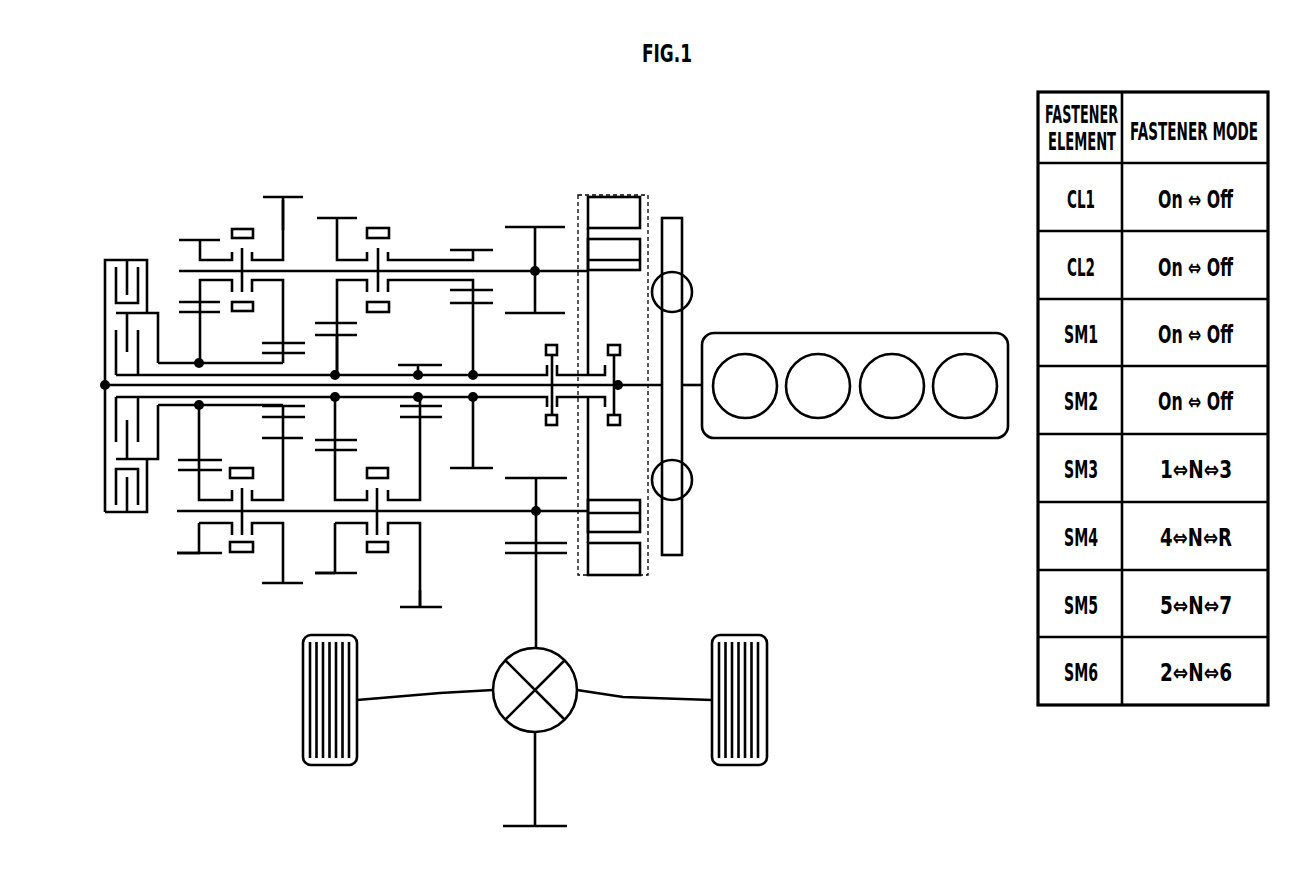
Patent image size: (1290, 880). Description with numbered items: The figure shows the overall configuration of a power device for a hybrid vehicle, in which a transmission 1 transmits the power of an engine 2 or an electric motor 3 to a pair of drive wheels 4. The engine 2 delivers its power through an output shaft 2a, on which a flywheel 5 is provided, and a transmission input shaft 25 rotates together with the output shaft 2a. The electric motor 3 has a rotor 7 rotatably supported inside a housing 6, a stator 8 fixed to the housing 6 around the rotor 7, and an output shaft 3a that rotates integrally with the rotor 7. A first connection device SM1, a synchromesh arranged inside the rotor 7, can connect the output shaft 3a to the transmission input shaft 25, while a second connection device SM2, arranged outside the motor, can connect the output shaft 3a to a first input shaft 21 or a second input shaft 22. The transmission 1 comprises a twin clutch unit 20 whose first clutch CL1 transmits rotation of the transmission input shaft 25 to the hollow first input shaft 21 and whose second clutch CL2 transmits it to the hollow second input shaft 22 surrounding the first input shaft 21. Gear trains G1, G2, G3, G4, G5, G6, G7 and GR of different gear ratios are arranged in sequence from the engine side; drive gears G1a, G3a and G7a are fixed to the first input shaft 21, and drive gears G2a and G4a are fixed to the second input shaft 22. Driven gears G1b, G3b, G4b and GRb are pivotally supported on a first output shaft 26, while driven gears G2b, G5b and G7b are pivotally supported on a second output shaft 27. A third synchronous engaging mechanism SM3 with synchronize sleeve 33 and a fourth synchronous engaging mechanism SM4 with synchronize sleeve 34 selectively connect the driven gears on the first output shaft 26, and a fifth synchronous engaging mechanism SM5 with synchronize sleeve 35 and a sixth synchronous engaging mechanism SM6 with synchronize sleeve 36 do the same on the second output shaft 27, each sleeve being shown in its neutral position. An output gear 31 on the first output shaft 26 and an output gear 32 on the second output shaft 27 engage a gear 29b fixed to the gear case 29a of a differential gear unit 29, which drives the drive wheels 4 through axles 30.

The transmission 1 is at (403, 140).
The engine 2 is at (780, 333).
The output shaft 2a is at (694, 382).
The electric motor 3 is at (648, 370).
The output shaft 3a is at (597, 400).
The drive wheels 4 is at (358, 738).
The flywheel 5 is at (674, 208).
The housing 6 is at (581, 195).
The rotor 7 is at (633, 249).
The stator 8 is at (633, 203).
The twin clutch unit 20 is at (112, 339).
The first input shaft 21 is at (454, 374).
The second input shaft 22 is at (178, 361).
The transmission input shaft 25 is at (178, 399).
The first output shaft 26 is at (484, 514).
The second output shaft 27 is at (513, 270).
The differential gear unit 29 is at (572, 654).
The gear case 29a is at (560, 725).
The gear 29b is at (538, 605).
The axles 30 is at (464, 697).
The output gear 31 is at (534, 494).
The output gear 32 is at (538, 252).
The synchronize sleeve 33 is at (377, 467).
The synchronize sleeve 34 is at (248, 467).
The synchronize sleeve 35 is at (390, 305).
The synchronize sleeve 36 is at (251, 304).
The first clutch CL1 is at (112, 430).
The second clutch CL2 is at (131, 371).
The first connection device SM1 is at (613, 370).
The second connection device SM2 is at (551, 370).
The third synchronous engaging mechanism SM3 is at (378, 564).
The fourth synchronous engaging mechanism SM4 is at (240, 564).
The fifth synchronous engaging mechanism SM5 is at (379, 246).
The sixth synchronous engaging mechanism SM6 is at (240, 246).
The first gear train G1 is at (415, 581).
The drive gear G1a is at (418, 364).
The driven gear G1b is at (424, 606).
The second gear train G2 is at (277, 212).
The drive gear G2a is at (241, 361).
The driven gear G2b is at (295, 194).
The third gear train G3 is at (341, 565).
The drive gear G3a is at (338, 357).
The driven gear G3b is at (329, 572).
The fourth gear train G4 is at (204, 555).
The drive gear G4a is at (200, 451).
The driven gear G4b is at (184, 556).
The fifth gear train G5 is at (342, 225).
The driven gear G5b is at (336, 329).
The sixth gear train G6 is at (205, 235).
The seventh gear train G7 is at (440, 241).
The drive gear G7a is at (475, 438).
The driven gear G7b is at (477, 288).
The reverse gear train GR is at (277, 569).
The driven gear GRb is at (299, 440).